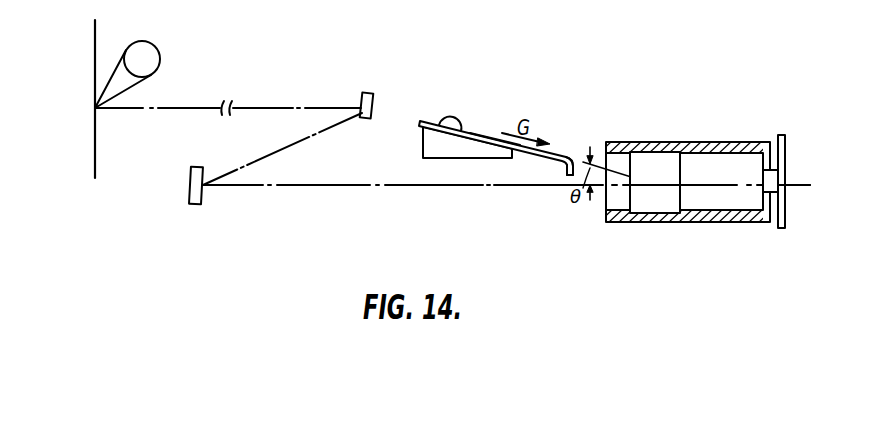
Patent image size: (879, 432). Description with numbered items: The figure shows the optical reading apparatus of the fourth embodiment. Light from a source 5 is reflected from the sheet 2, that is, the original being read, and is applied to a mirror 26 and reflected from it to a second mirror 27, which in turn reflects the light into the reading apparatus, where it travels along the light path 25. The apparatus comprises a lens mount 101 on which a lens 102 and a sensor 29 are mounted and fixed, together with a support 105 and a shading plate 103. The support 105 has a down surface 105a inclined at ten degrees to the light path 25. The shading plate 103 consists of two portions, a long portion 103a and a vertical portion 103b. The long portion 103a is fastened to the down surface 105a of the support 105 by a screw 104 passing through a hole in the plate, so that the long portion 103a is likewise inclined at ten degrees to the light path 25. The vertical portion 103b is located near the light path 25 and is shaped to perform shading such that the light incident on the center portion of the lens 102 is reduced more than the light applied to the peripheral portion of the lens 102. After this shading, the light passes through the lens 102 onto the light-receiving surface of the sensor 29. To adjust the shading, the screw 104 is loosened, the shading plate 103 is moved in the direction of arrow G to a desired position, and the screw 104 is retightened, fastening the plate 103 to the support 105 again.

The sheet 2 is at (95, 159).
The light source 5 is at (158, 44).
The light path 25 is at (336, 188).
The mirror 26 is at (366, 92).
The mirror 27 is at (198, 205).
The sensor 29 is at (782, 228).
The lens mount 101 is at (726, 222).
The lens 102 is at (658, 198).
The shading plate 103 is at (562, 156).
The long portion 103a is at (487, 143).
The vertical portion 103b is at (565, 176).
The screw 104 is at (452, 121).
The support 105 is at (445, 148).
The down surface 105a is at (500, 146).